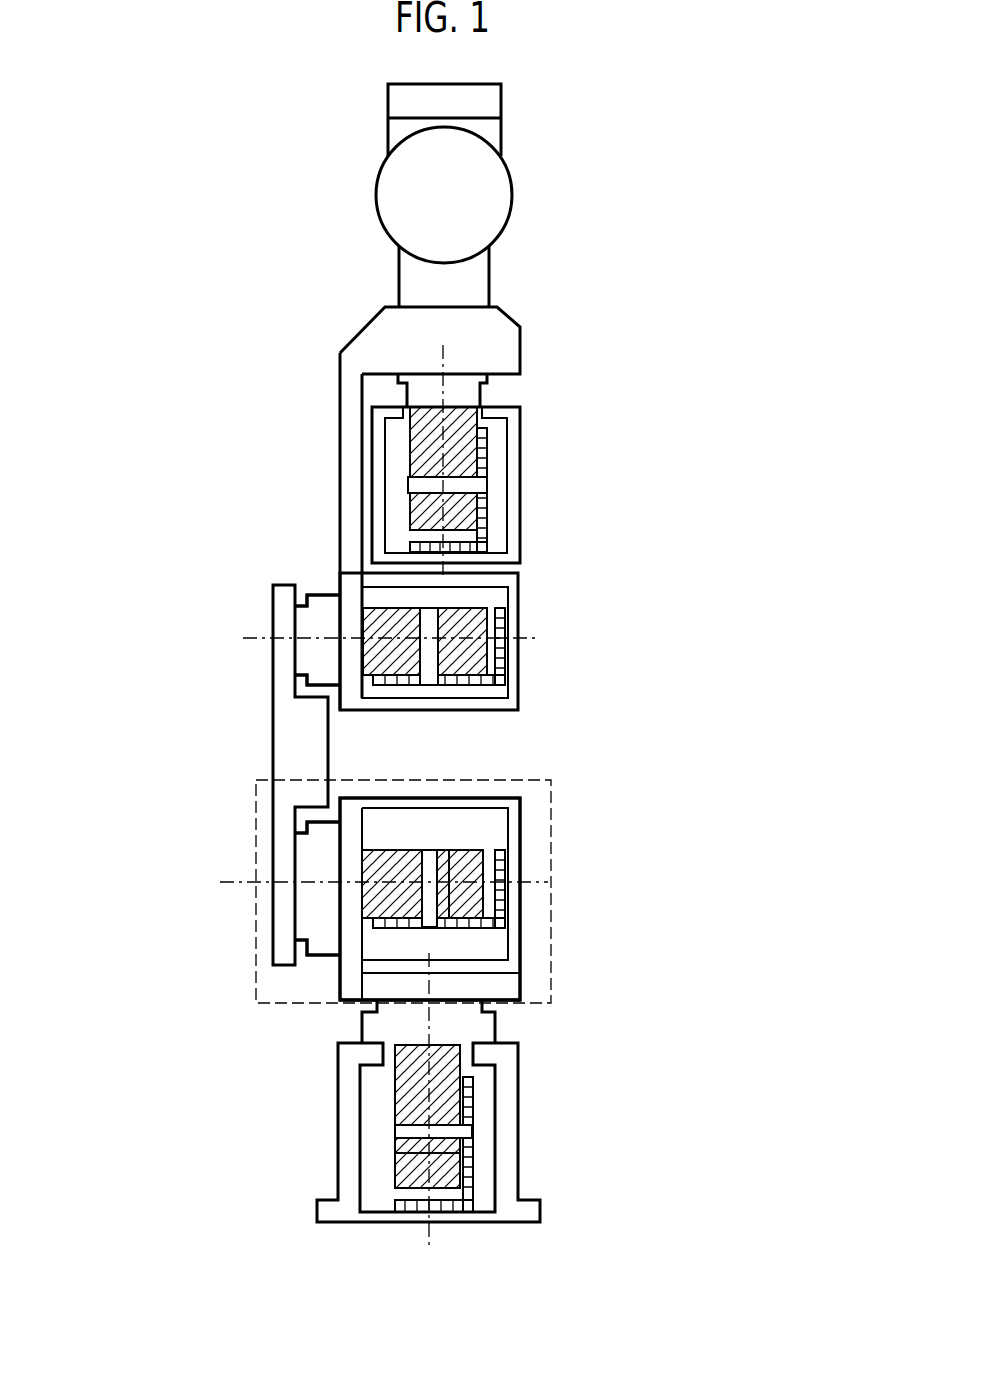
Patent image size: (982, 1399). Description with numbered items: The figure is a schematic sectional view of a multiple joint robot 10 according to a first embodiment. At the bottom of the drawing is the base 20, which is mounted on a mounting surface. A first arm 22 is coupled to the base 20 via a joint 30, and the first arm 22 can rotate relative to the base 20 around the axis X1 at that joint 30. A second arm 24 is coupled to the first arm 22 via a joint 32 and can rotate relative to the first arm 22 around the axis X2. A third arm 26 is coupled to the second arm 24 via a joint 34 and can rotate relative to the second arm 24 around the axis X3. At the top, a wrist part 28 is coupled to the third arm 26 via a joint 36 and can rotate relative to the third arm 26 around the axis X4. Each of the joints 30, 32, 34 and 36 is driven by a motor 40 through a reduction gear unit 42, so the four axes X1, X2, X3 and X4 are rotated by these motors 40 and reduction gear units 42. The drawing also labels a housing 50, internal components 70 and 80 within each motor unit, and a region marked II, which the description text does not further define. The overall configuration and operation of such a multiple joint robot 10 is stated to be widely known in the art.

The multiple joint robot 10 is at (188, 378).
The base 20 is at (518, 1073).
The first arm 22 is at (519, 983).
The second arm 24 is at (273, 745).
The third arm 26 is at (520, 353).
The wrist part 28 is at (346, 196).
The joint 30 is at (566, 1009).
The joint 32 is at (288, 976).
The joint 34 is at (293, 556).
The joint 36 is at (531, 373).
The motor 40 is at (410, 443).
The reduction gear unit 42 is at (398, 393).
The motor housing 50 is at (520, 492).
The rotor plate 70 is at (488, 486).
The coil 80 is at (488, 440).
The axis X1 is at (429, 1237).
The axis X2 is at (242, 883).
The axis X3 is at (252, 633).
The axis X4 is at (445, 386).
The section II is at (527, 777).